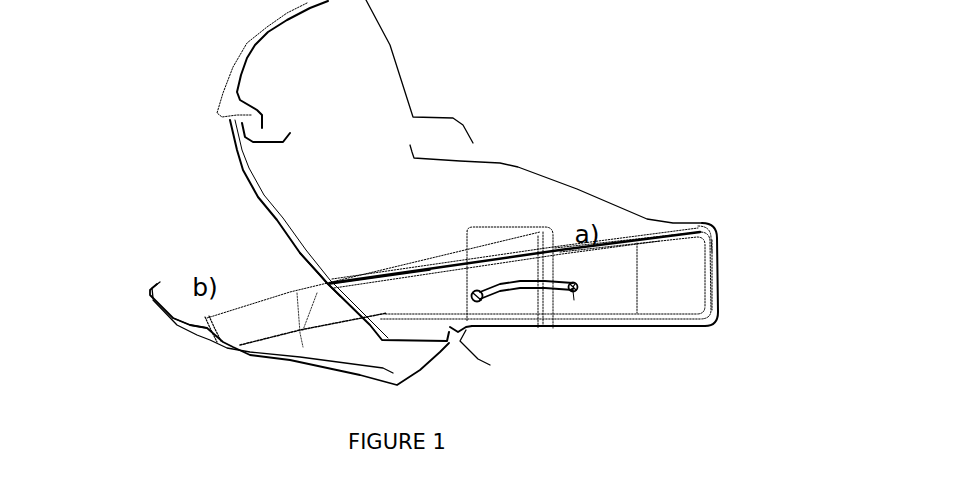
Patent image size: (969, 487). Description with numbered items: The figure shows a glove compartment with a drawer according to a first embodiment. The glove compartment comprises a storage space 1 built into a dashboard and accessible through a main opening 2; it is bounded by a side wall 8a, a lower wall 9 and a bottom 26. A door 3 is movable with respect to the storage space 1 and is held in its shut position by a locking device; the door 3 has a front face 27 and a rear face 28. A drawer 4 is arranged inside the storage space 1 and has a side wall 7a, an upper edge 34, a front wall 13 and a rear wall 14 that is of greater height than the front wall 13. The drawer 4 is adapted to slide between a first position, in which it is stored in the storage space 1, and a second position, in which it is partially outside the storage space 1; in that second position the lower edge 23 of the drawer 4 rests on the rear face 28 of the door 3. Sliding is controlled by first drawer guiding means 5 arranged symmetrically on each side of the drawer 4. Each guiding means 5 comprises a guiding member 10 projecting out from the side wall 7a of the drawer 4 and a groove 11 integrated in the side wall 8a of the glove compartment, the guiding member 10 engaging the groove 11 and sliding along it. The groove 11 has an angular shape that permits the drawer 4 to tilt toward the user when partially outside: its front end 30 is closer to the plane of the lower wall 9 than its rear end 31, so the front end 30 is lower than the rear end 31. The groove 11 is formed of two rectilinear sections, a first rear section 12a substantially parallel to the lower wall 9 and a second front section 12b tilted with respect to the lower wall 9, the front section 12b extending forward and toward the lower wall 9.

The storage space 1 is at (567, 199).
The main opening 2 is at (224, 211).
The door 3 is at (160, 318).
The drawer 4 is at (397, 263).
The first drawer guiding means 5 is at (525, 318).
The side wall of the drawer 7a is at (690, 241).
The side wall of the glove compartment 8a is at (515, 160).
The lower wall 9 is at (689, 326).
The guiding member 10 is at (577, 291).
The groove 11 is at (520, 278).
The first rear section 12a is at (562, 290).
The second front section 12b is at (497, 283).
The front wall 13 is at (328, 280).
The rear wall 14 is at (705, 282).
The lower edge 23 is at (244, 366).
The bottom 26 is at (718, 266).
The front face 27 is at (196, 357).
The rear face 28 is at (166, 290).
The front end 30 is at (462, 292).
The rear end 31 is at (590, 290).
The upper edge 34 is at (359, 257).